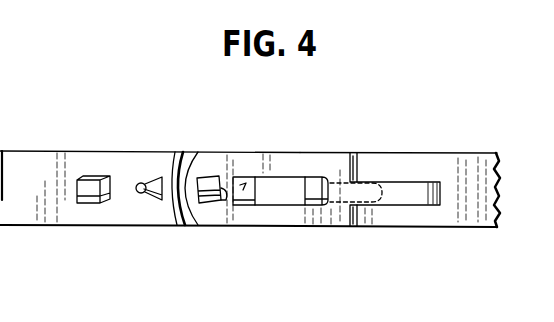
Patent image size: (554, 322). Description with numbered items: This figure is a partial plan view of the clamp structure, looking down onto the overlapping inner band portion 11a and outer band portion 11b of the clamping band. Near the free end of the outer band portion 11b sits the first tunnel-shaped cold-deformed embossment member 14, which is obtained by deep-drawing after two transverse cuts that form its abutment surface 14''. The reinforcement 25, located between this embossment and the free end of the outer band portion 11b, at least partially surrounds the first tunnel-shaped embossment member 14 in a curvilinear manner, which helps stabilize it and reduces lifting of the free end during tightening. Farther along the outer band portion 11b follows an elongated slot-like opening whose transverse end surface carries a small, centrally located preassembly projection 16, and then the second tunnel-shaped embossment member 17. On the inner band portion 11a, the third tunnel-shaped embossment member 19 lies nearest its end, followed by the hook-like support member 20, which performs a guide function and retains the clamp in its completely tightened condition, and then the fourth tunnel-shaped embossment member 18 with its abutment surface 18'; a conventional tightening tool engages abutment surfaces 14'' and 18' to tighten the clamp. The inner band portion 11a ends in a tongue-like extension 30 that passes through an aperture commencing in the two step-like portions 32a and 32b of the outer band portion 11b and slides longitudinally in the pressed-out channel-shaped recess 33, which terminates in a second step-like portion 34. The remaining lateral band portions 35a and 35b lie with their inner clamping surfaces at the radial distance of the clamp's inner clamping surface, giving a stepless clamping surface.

The inner band portion 11a is at (118, 163).
The outer band portion 11b is at (285, 163).
The first tunnel-shaped cold-deformed embossment member 14 is at (216, 144).
The abutment surface 14'' is at (201, 233).
The preassembly projection 16 is at (250, 175).
The second cold-deformed tunnel-shaped embossment member 17 is at (315, 188).
The fourth tunnel-shaped cold-deformed embossment member 18 is at (86, 227).
The abutment surface 18' is at (59, 139).
The third tunnel-shaped cold-deformed embossment member 19 is at (252, 207).
The hook-like support member 20 is at (149, 191).
The reinforcement 25 is at (185, 153).
The tongue-like extension 30 is at (330, 204).
The step-like portion 32a is at (355, 207).
The step-like portion 32b is at (353, 167).
The pressed-out channel-shaped recess 33 is at (410, 193).
The second step-like portion 34 is at (441, 202).
The lateral band portion 35a is at (420, 222).
The lateral band portion 35b is at (397, 165).